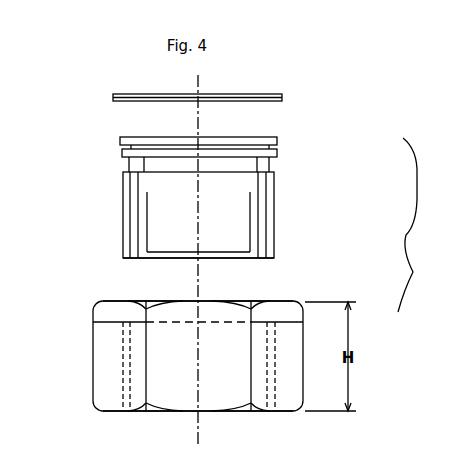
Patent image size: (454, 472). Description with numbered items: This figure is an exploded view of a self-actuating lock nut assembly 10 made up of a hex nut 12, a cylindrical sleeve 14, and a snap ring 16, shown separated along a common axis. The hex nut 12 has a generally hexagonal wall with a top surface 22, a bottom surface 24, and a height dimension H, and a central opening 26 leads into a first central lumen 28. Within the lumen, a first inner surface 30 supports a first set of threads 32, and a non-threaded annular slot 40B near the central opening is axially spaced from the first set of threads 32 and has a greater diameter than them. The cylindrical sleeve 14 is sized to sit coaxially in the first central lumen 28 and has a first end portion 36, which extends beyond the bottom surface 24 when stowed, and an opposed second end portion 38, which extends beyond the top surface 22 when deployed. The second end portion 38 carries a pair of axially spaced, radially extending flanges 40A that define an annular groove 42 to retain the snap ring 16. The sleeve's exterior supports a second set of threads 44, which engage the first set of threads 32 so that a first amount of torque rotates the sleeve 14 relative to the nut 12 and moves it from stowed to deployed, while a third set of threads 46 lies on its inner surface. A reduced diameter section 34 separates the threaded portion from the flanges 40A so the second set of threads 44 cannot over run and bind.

The self-actuating lock nut assembly 10 is at (420, 225).
The hex nut 12 is at (186, 354).
The cylindrical sleeve 14 is at (219, 221).
The snap ring 16 is at (235, 95).
The top surface 22 is at (130, 300).
The bottom surface 24 is at (183, 411).
The central opening 26 is at (190, 300).
The first central lumen 28 is at (213, 220).
The first inner surface 30 is at (130, 363).
The first set of threads 32 is at (127, 368).
The reduced diameter section 34 is at (182, 142).
The first end portion 36 is at (187, 260).
The second end portion 38 is at (267, 138).
The radially extending flanges 40A is at (126, 166).
The non-threaded annular slot 40B is at (124, 312).
The annular groove 42 is at (277, 151).
The second set of threads 44 is at (123, 228).
The third set of threads 46 is at (147, 198).